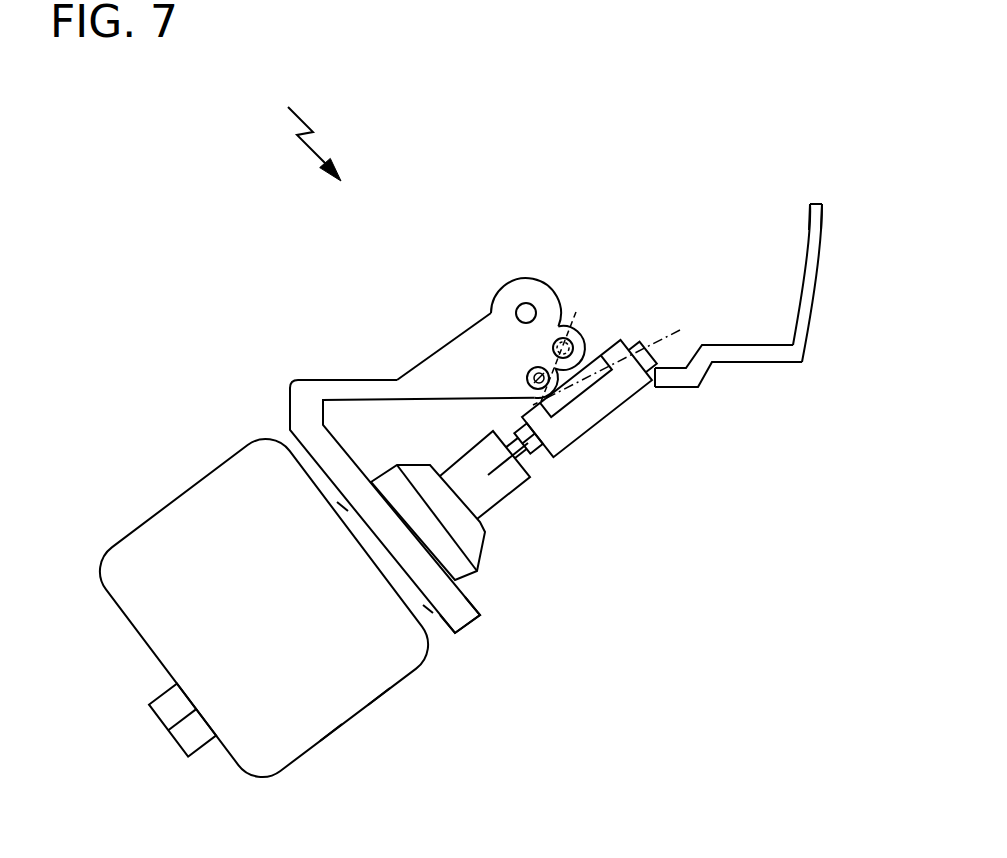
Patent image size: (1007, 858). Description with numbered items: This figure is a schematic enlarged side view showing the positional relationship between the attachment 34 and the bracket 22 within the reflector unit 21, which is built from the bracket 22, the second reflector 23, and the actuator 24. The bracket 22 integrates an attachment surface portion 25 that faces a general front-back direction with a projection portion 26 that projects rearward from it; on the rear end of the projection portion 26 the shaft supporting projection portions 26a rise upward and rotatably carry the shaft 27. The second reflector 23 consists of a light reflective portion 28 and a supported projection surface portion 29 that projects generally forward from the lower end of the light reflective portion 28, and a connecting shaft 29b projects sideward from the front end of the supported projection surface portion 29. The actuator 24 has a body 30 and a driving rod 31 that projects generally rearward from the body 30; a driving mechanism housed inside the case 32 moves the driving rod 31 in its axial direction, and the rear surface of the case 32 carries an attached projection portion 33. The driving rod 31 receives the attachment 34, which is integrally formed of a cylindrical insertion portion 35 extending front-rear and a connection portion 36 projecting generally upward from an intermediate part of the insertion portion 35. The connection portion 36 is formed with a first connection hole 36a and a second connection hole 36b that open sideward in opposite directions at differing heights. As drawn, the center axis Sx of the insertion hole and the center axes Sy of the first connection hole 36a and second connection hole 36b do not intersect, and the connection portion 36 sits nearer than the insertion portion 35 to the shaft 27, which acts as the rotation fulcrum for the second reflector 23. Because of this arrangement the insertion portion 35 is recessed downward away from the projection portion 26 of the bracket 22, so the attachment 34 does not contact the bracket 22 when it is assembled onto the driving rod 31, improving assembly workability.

The reflector unit 21 is at (282, 100).
The bracket 22 is at (337, 380).
The second reflector 23 is at (817, 213).
The actuator 24 is at (180, 520).
The attachment surface portion 25 is at (463, 617).
The projection portion 26 is at (362, 380).
The shaft supporting projection portions 26a is at (498, 292).
The shaft 27 is at (525, 303).
The light reflective portion 28 is at (820, 265).
The supported projection surface portion 29 is at (673, 382).
The connecting shaft 29b is at (564, 327).
The body 30 is at (313, 720).
The driving rod 31 is at (550, 453).
The case 32 is at (367, 685).
The attached projection portion 33 is at (478, 572).
The attachment 34 is at (605, 415).
The insertion portion 35 is at (593, 422).
The connection portion 36 is at (584, 356).
The first connection hole 36a is at (557, 339).
The second connection hole 36b is at (519, 380).
The center axis of the insertion hole Sx is at (680, 330).
The center axes of the connection holes Sy is at (579, 332).